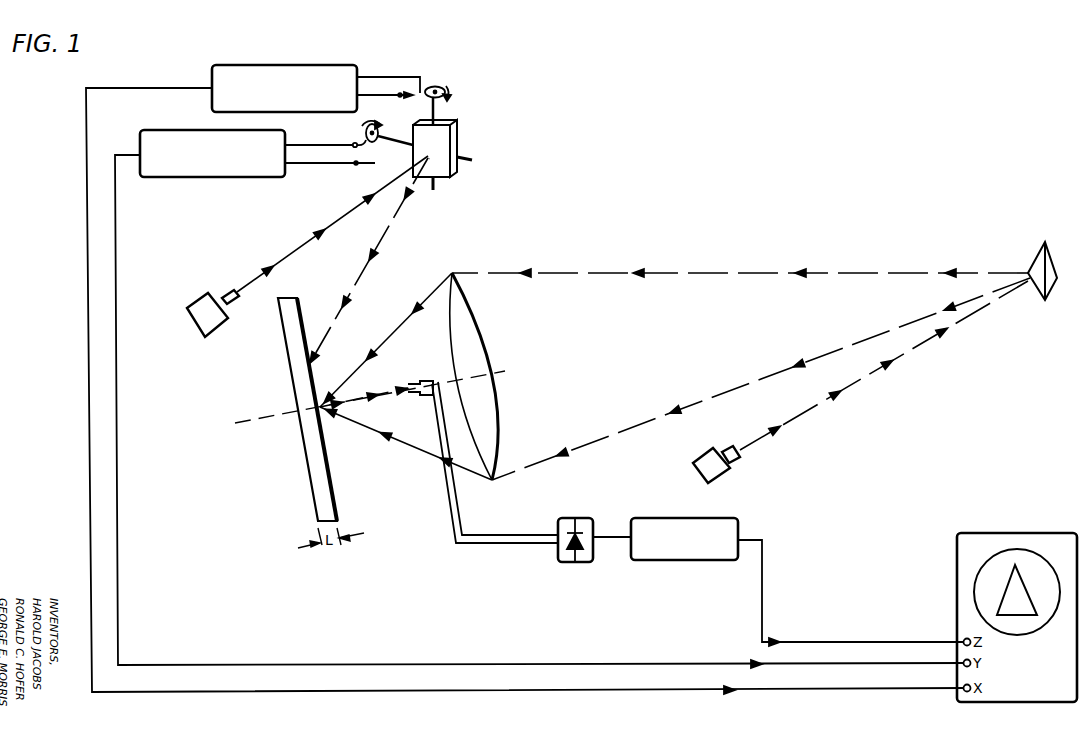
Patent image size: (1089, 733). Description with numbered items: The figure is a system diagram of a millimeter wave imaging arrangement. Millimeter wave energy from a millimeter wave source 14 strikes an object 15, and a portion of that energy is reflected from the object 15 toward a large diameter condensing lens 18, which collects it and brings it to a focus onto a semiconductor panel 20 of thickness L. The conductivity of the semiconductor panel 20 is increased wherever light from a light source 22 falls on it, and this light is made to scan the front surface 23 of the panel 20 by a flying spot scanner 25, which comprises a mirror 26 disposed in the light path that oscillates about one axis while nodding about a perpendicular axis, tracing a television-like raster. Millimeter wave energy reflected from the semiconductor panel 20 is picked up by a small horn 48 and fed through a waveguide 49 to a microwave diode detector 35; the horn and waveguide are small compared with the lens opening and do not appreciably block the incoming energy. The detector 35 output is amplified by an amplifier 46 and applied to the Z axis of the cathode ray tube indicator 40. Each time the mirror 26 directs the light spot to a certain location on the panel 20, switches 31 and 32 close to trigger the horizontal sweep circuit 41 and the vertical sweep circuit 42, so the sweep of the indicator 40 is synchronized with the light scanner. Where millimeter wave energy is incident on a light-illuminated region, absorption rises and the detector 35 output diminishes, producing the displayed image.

The millimeter wave source 14 is at (730, 466).
The object 15 is at (1037, 262).
The condensing lens 18 is at (482, 350).
The semiconductor panel 20 is at (305, 474).
The light source 22 is at (200, 300).
The front surface 23 is at (330, 474).
The flying spot scanner 25 is at (464, 113).
The mirror 26 is at (452, 182).
The switch 31 is at (418, 82).
The switch 32 is at (350, 145).
The microwave diode detector 35 is at (566, 518).
The cathode ray tube indicator 40 is at (1003, 533).
The horizontal sweep circuit 41 is at (270, 64).
The vertical sweep circuit 42 is at (192, 130).
The amplifier 46 is at (678, 518).
The horn 48 is at (421, 381).
The waveguide 49 is at (455, 530).